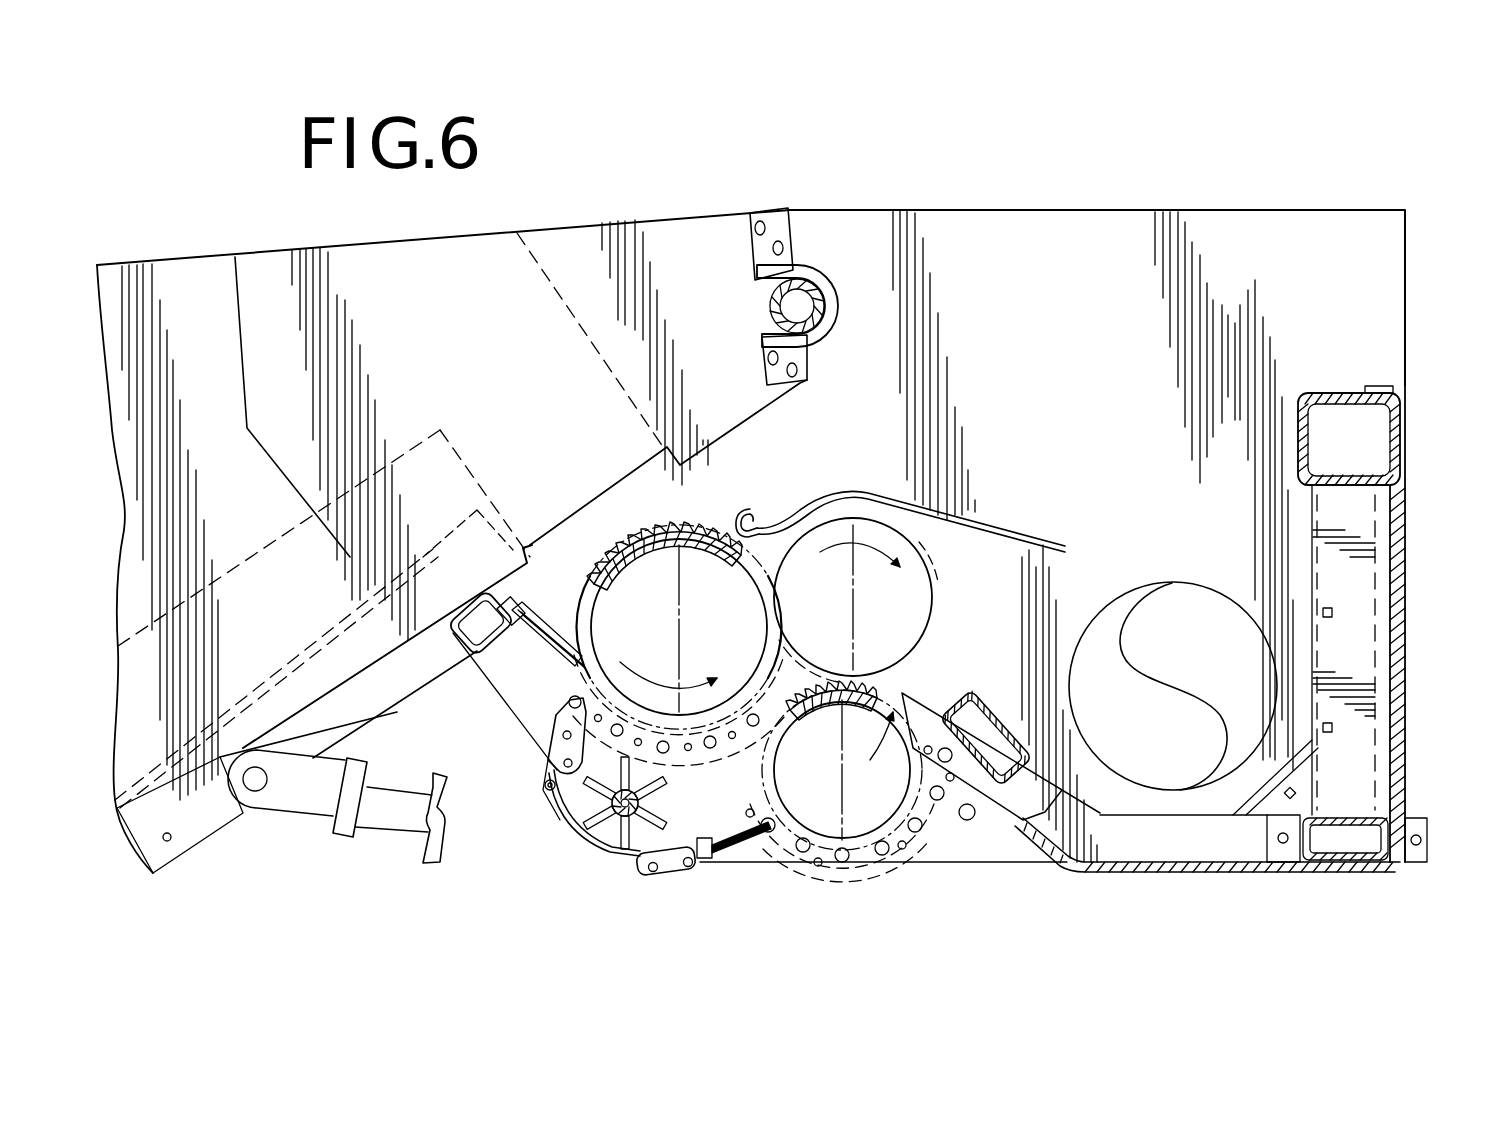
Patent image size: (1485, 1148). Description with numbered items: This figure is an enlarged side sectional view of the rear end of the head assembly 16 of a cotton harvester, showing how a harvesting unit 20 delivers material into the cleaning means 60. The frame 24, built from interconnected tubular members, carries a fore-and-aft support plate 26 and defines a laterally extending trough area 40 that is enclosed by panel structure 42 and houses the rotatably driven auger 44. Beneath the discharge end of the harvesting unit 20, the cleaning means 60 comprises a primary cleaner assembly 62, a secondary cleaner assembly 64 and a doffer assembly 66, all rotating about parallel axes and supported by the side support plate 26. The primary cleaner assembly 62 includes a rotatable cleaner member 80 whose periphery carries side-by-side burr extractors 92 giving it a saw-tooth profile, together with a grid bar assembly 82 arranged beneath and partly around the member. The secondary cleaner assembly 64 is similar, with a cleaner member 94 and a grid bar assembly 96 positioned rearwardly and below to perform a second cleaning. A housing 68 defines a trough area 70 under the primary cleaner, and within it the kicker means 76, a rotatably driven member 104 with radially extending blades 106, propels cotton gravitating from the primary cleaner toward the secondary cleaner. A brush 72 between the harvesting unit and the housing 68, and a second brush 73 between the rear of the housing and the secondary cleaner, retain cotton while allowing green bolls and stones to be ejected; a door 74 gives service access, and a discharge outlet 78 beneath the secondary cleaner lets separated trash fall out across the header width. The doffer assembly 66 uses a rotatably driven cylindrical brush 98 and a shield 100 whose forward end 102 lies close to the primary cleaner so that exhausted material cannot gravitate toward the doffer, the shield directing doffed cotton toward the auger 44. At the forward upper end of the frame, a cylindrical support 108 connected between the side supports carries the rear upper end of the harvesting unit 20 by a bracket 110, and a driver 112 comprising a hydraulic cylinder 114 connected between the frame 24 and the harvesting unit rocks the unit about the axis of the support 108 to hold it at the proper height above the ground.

The head assembly 16 is at (1035, 160).
The harvesting unit 20 is at (275, 248).
The frame 24 is at (1342, 378).
The support plate 26 is at (1065, 228).
The trough area 40 is at (1208, 796).
The panel structure 42 is at (1408, 530).
The auger 44 is at (1180, 580).
The cleaning means 60 is at (808, 440).
The primary cleaner assembly 62 is at (688, 508).
The secondary cleaner assembly 64 is at (775, 850).
The doffer assembly 66 is at (932, 575).
The housing 68 is at (575, 828).
The trough area 70 is at (612, 837).
The brush 72 is at (516, 680).
The brush 73 is at (748, 838).
The door 74 is at (560, 812).
The kicker means 76 is at (548, 782).
The discharge outlet 78 is at (1012, 848).
The cleaner member 80 is at (667, 516).
The grid bar assembly 82 is at (563, 702).
The burr extractor 92 is at (616, 545).
The cleaner member 94 is at (880, 705).
The grid bar assembly 96 is at (885, 870).
The brush 98 is at (905, 600).
The shield 100 is at (1000, 520).
The forward end 102 is at (740, 530).
The member 104 is at (640, 860).
The blade 106 is at (585, 832).
The support 108 is at (838, 318).
The bracket 110 is at (783, 272).
The driver 112 is at (272, 818).
The hydraulic cylinder 114 is at (420, 840).